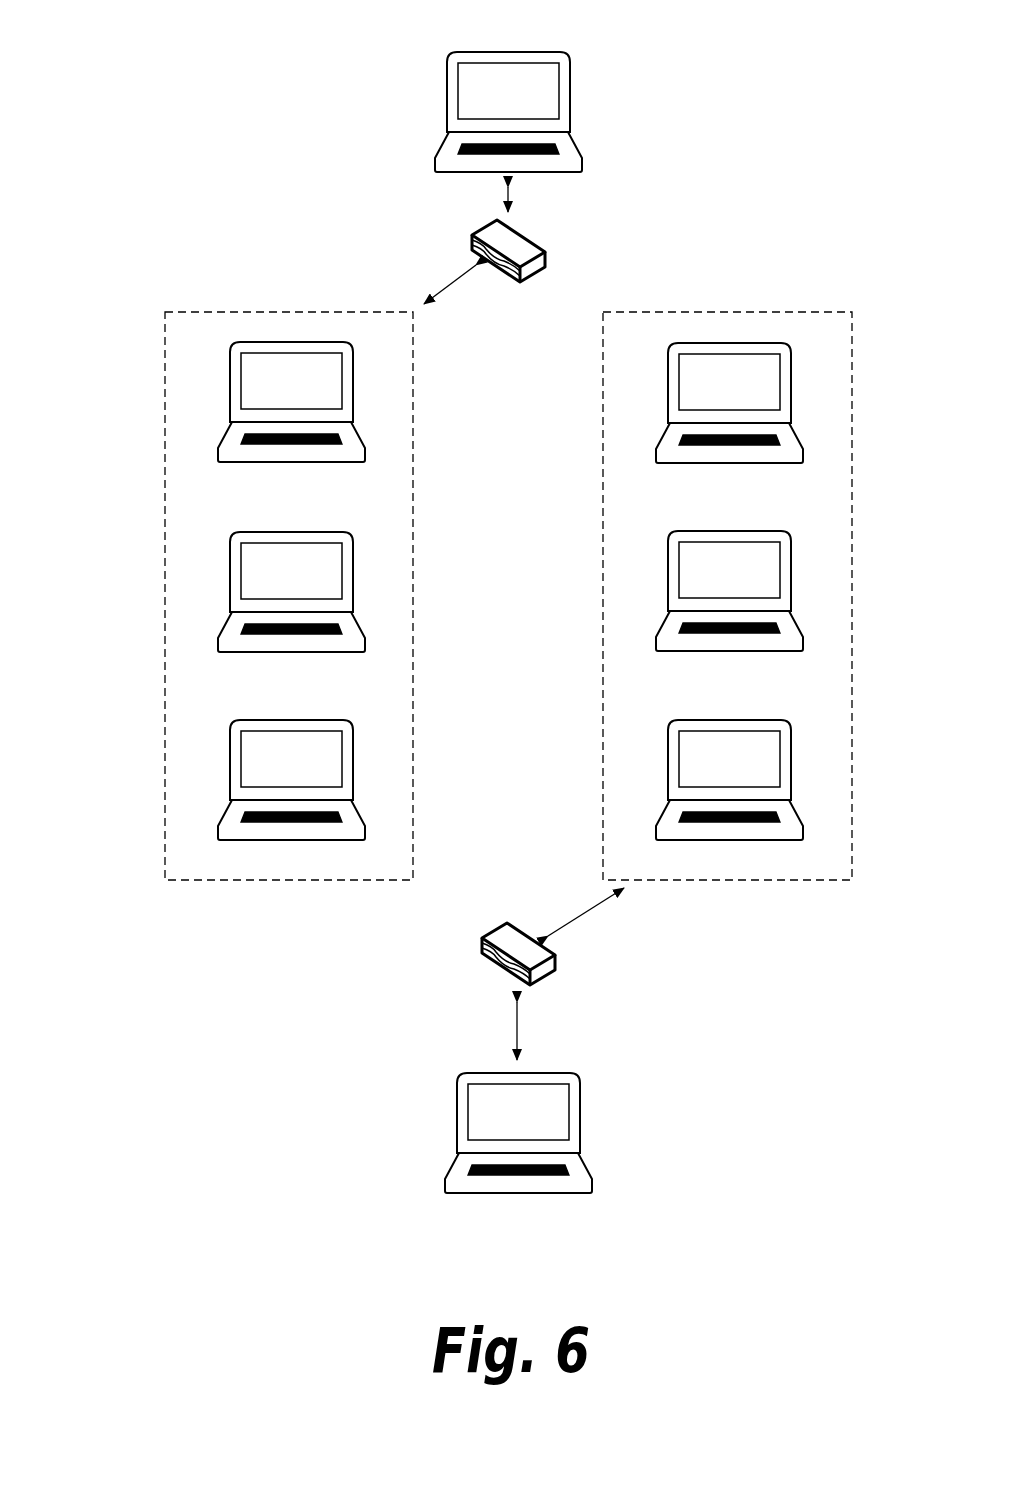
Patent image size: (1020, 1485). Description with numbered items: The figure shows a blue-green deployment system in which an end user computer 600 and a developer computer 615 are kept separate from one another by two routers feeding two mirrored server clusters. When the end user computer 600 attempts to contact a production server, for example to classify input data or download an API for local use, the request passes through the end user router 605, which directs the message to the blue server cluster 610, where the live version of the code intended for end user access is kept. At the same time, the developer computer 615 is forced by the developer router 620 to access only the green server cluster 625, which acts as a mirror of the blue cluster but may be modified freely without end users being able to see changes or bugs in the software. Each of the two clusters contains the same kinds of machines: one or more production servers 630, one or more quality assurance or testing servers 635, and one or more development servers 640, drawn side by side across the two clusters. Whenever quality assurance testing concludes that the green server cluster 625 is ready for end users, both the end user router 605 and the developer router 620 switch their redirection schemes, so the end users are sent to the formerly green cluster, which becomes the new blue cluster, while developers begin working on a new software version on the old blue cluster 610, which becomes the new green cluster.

The end user computer 600 is at (570, 96).
The end user router 605 is at (545, 248).
The blue server cluster 610 is at (165, 312).
The developer computer 615 is at (457, 1125).
The developer router 620 is at (482, 958).
The green server cluster 625 is at (852, 312).
The production server 630 is at (670, 402).
The quality assurance or testing server 635 is at (668, 593).
The development server 640 is at (668, 790).